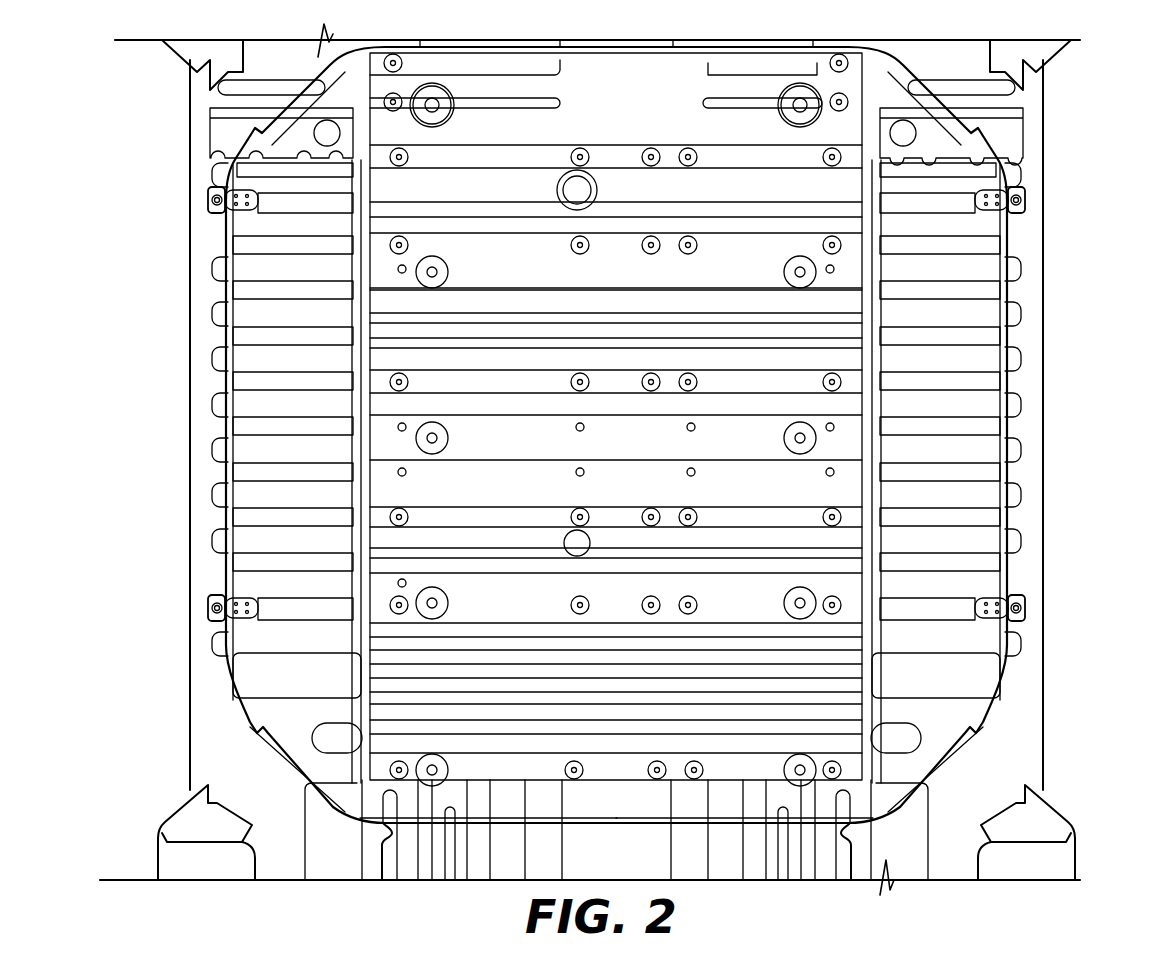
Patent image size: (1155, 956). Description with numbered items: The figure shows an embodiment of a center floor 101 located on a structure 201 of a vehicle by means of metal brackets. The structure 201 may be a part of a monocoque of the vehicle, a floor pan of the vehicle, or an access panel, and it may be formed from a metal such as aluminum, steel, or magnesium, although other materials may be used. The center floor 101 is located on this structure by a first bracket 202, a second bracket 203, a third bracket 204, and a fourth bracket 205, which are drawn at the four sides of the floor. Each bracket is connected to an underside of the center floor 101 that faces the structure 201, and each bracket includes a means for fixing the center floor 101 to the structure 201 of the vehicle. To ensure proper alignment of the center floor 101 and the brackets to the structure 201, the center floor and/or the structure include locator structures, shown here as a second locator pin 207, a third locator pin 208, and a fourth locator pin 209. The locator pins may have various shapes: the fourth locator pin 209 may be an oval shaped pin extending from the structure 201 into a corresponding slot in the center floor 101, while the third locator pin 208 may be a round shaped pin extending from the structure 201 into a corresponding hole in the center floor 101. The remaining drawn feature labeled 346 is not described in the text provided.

The center floor 101 is at (887, 338).
The structure 201 is at (968, 112).
The first bracket 202 is at (213, 201).
The second bracket 203 is at (1020, 201).
The third bracket 204 is at (213, 608).
The fourth bracket 205 is at (1020, 608).
The second locator pin 207 is at (897, 132).
The third locator pin 208 is at (575, 174).
The fourth locator pin 209 is at (565, 543).
The mounting boss 346 is at (325, 134).